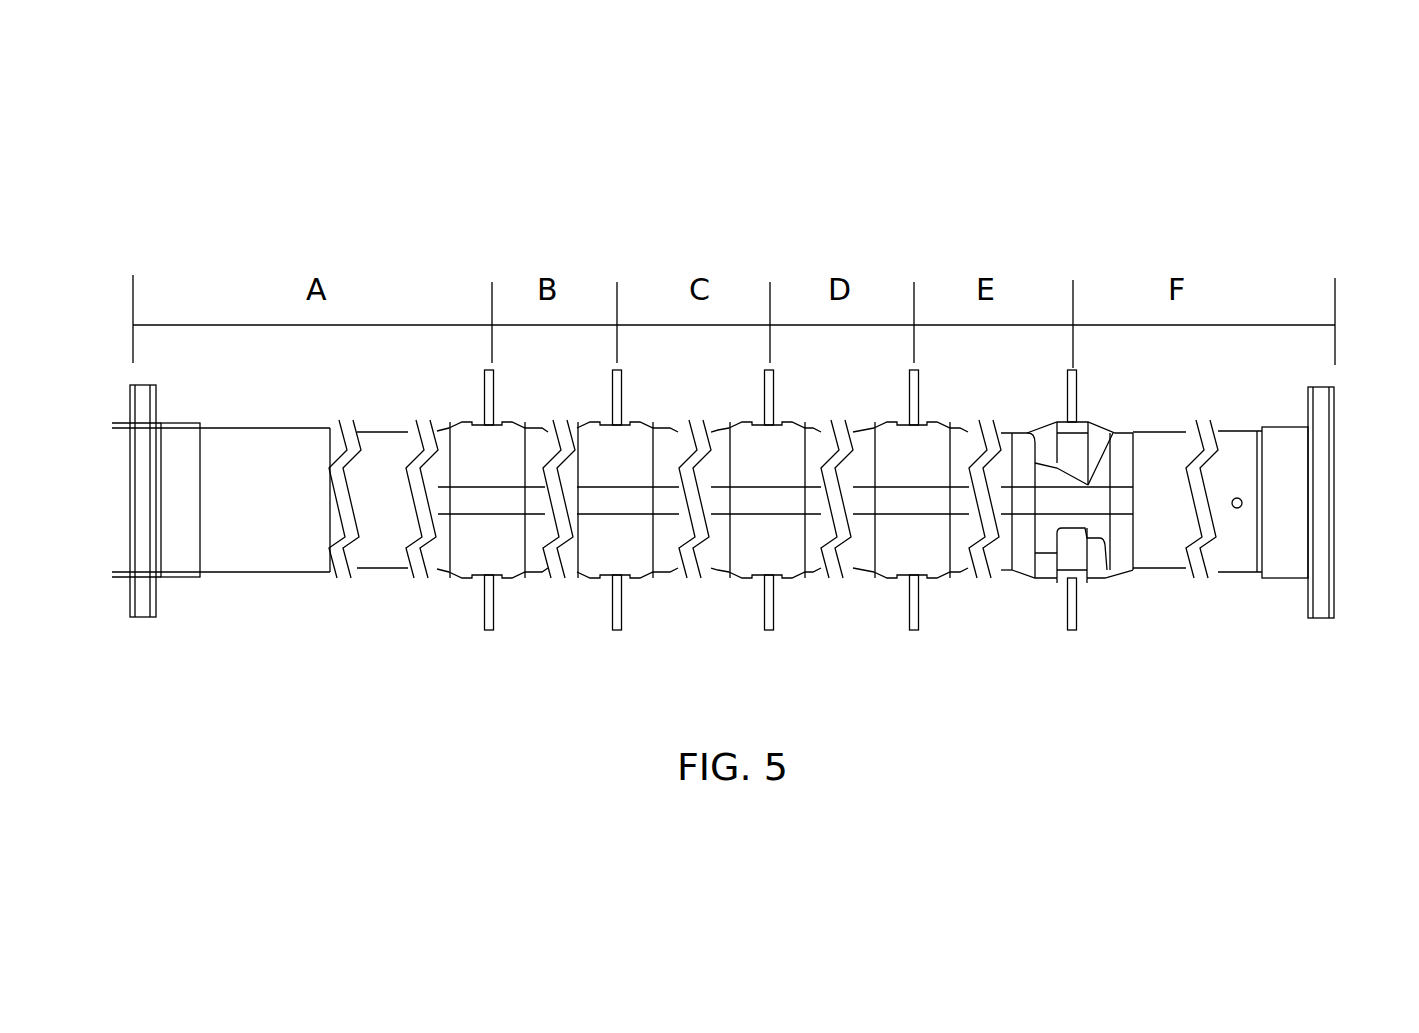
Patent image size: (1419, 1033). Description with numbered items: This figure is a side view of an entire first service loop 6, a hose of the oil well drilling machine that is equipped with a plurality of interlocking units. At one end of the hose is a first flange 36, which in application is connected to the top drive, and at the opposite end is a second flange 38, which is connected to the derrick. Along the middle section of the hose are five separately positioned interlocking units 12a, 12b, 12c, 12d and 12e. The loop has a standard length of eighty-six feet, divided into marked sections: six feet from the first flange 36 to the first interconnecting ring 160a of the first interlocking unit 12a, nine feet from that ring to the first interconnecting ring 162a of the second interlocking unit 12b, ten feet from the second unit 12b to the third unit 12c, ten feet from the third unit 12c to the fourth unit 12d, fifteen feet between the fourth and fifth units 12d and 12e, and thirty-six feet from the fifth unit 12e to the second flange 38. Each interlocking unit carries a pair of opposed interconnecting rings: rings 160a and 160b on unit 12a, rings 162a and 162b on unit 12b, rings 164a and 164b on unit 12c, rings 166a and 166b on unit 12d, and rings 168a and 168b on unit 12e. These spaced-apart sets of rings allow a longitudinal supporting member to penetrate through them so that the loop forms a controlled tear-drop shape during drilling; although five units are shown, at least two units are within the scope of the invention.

The first service loop 6 is at (1104, 139).
The first interlocking unit 12a is at (457, 605).
The second interlocking unit 12b is at (585, 605).
The third interlocking unit 12c is at (737, 605).
The fourth interlocking unit 12d is at (881, 605).
The fifth interlocking unit 12e is at (1039, 605).
The first flange 36 is at (133, 493).
The second flange 38 is at (1334, 491).
The first interconnecting ring 160a is at (495, 400).
The opposite interconnecting ring 160b is at (488, 635).
The first interconnecting ring 162a is at (623, 400).
The opposite interconnecting ring 162b is at (616, 635).
The interconnecting ring 164a is at (775, 400).
The opposite interconnecting ring 164b is at (769, 635).
The interconnecting ring 166a is at (919, 400).
The opposite interconnecting ring 166b is at (913, 635).
The interconnecting ring 168a is at (1079, 400).
The opposite interconnecting ring 168b is at (1073, 635).